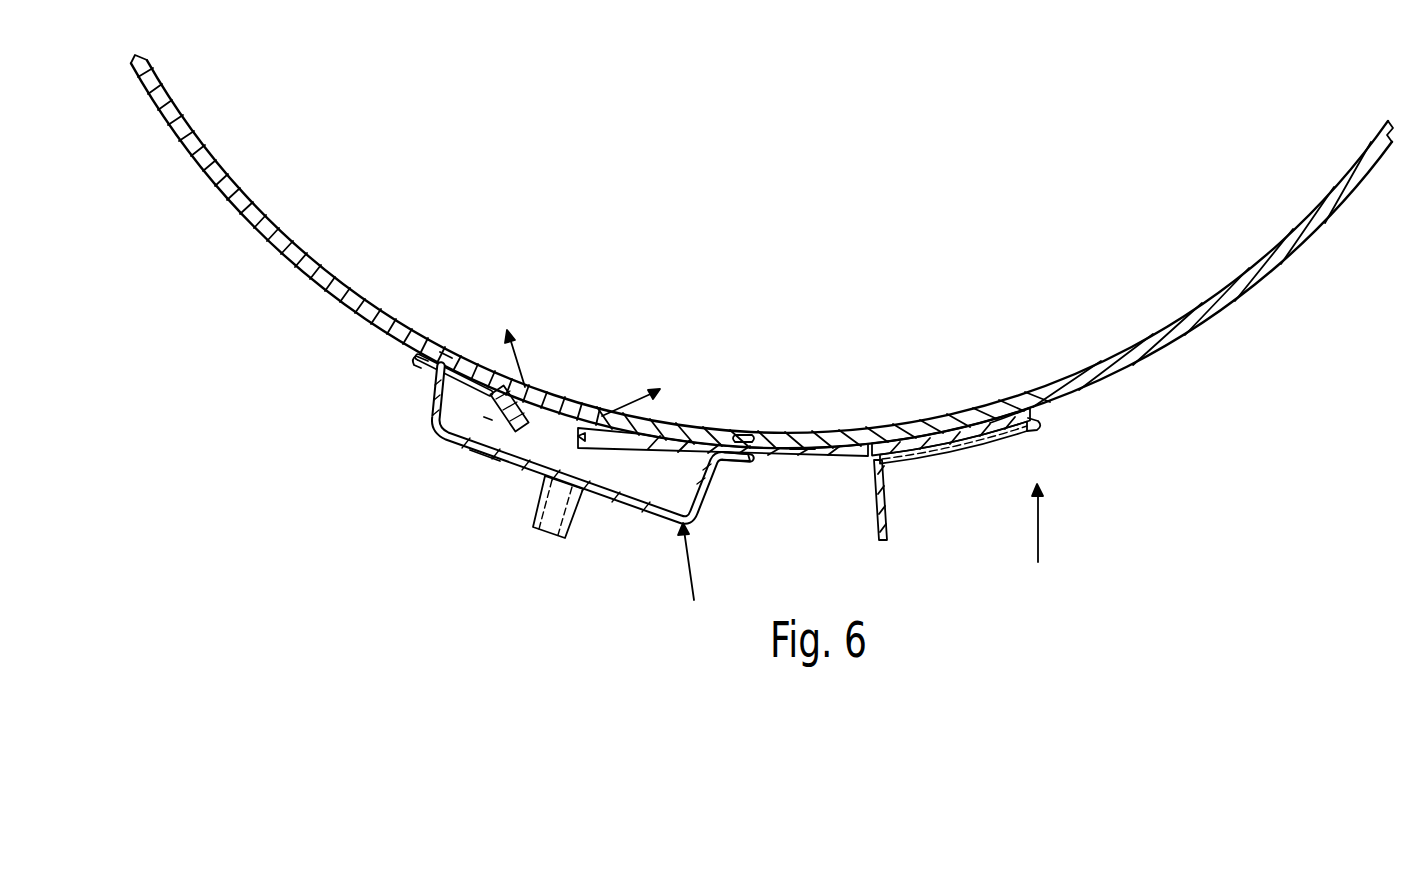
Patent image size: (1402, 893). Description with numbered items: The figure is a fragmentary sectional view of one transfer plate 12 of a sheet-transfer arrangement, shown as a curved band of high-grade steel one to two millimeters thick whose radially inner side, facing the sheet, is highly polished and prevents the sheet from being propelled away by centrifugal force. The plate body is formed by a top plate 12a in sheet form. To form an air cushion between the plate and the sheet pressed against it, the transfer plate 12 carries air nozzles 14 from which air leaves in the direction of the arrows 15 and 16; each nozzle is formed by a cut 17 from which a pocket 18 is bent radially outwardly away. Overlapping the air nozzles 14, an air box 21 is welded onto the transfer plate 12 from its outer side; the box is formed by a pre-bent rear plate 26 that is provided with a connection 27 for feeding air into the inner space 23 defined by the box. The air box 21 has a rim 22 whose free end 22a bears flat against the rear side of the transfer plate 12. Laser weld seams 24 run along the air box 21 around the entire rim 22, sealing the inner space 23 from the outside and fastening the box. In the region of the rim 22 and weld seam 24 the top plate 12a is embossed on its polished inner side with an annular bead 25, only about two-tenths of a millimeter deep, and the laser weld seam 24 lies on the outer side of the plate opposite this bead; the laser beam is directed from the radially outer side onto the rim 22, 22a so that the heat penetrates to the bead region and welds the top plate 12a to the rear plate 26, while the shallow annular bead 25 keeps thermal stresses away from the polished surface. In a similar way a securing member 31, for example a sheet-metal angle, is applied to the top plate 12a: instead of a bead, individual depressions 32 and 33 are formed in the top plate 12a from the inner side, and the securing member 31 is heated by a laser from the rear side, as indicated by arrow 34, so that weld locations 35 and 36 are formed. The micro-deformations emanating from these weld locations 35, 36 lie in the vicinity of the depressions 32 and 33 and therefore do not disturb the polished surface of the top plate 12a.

The transfer plate 12 is at (1069, 274).
The top plate 12a is at (803, 438).
The air nozzles 14 is at (625, 376).
The arrow 15 is at (519, 357).
The arrow 16 is at (640, 400).
The cut 17 is at (537, 390).
The pocket 18 is at (484, 417).
The air box 21 is at (696, 575).
The rim 22 is at (720, 478).
The free end 22a is at (416, 363).
The inner space 23 is at (684, 485).
The laser weld seam 24 is at (748, 468).
The annular bead 25 is at (450, 341).
The rear plate 26 is at (484, 456).
The connection 27 is at (575, 518).
The securing member 31 is at (890, 505).
The depression 32 is at (888, 426).
The depression 33 is at (1005, 395).
The arrow 34 is at (1038, 527).
The weld location 35 is at (1024, 433).
The weld location 36 is at (896, 462).